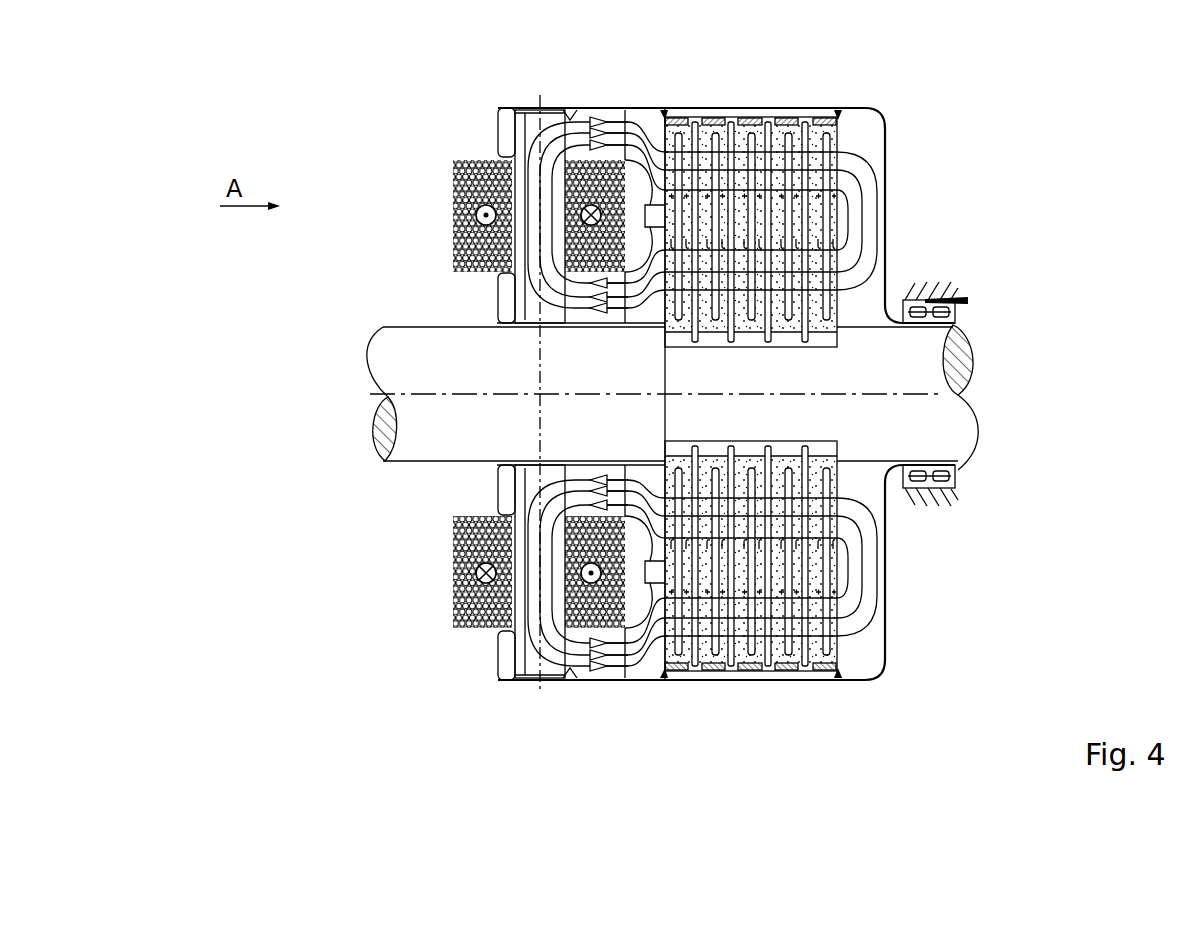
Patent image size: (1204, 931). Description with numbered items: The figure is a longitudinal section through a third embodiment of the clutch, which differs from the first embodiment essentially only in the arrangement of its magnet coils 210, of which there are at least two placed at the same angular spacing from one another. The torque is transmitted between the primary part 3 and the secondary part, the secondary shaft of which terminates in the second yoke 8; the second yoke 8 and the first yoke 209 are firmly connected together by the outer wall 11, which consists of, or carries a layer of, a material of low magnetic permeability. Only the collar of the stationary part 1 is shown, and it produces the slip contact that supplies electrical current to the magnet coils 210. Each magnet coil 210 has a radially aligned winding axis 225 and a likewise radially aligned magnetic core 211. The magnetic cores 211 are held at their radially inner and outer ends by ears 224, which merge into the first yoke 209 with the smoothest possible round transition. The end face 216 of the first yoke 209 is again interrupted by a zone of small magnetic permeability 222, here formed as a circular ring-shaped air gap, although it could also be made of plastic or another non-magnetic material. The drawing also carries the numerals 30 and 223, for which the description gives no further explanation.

The stationary part 1 is at (938, 288).
The primary part 3 is at (438, 445).
The second yoke 8 is at (857, 135).
The outer wall 11 is at (753, 111).
The shaft end 30 is at (928, 395).
The first yoke 209 is at (646, 118).
The magnet coil 210 is at (465, 172).
The magnetic core 211 is at (522, 130).
The end face 216 is at (641, 203).
The zone of small magnetic permeability 222 is at (650, 202).
The air gap 223 is at (565, 108).
The ears 224 is at (503, 500).
The winding axis 225 is at (540, 298).